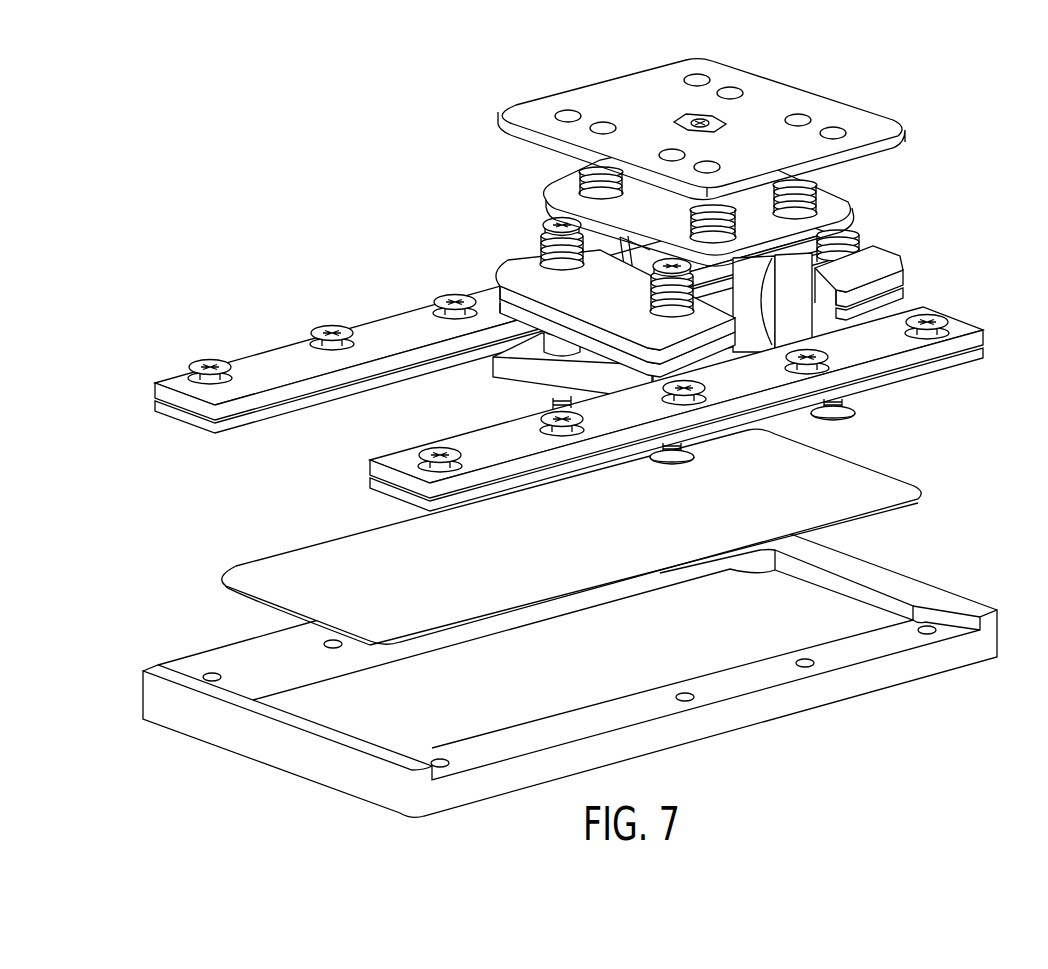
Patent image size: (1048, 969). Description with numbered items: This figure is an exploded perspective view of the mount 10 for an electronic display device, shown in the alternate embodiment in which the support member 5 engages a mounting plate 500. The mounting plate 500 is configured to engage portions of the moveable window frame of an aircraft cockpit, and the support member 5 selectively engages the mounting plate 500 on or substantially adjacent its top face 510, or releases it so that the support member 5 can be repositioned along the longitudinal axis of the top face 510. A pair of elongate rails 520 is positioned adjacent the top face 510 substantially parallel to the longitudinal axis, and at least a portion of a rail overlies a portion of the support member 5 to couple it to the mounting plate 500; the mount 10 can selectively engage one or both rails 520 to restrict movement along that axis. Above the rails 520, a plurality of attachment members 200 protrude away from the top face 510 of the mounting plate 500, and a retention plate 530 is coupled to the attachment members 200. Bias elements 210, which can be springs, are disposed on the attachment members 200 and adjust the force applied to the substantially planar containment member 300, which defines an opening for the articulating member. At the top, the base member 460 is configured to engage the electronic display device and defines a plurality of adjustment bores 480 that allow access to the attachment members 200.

The support member 5 is at (917, 276).
The mount 10 is at (937, 84).
The attachment members 200 is at (545, 222).
The bias elements 210 is at (545, 247).
The containment member 300 is at (850, 212).
The base member 460 is at (885, 136).
The adjustment bores 480 is at (800, 118).
The mounting plate 500 is at (937, 583).
The top face 510 is at (332, 555).
The elongate rails 520 is at (380, 332).
The retention plate 530 is at (873, 255).